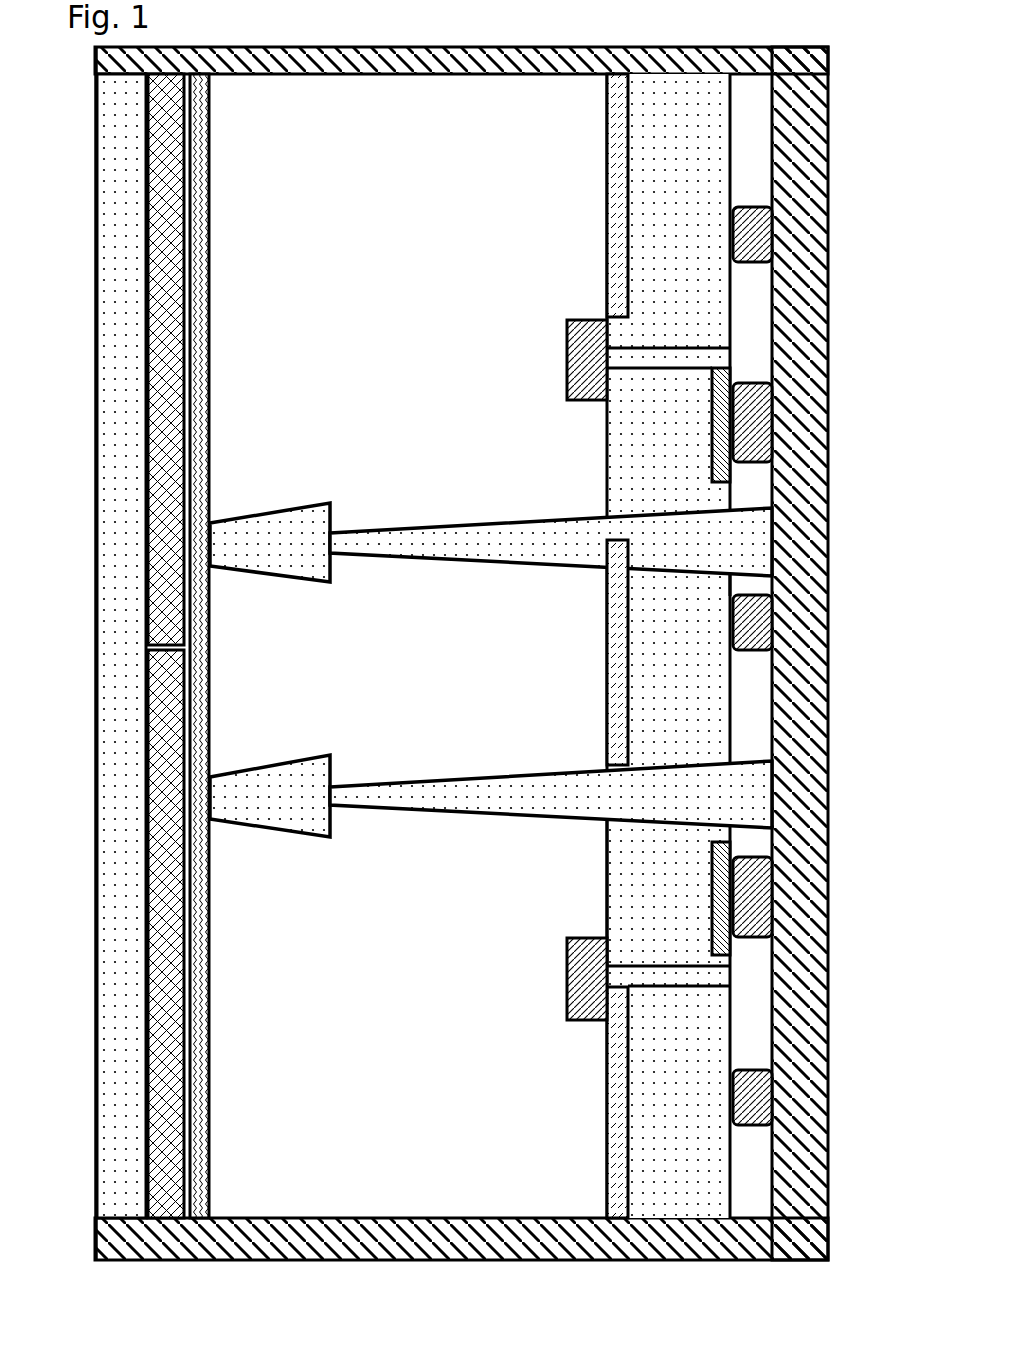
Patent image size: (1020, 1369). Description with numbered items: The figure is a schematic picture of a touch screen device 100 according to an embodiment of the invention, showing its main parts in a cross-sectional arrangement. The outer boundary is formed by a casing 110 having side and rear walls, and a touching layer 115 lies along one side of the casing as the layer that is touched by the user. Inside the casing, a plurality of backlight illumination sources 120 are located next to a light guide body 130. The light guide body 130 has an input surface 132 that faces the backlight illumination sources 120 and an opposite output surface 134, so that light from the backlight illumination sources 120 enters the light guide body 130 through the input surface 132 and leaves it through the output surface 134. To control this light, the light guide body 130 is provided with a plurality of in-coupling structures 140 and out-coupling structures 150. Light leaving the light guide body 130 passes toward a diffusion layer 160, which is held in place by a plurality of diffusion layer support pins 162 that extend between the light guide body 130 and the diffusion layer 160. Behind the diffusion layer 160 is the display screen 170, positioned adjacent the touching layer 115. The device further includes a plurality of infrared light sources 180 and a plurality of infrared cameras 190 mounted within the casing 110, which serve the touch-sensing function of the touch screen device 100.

The touch screen device 100 is at (282, 29).
The casing 110 is at (108, 55).
The touching layer 115 is at (108, 138).
The backlight illumination sources 120 is at (757, 428).
The light guide body 130 is at (718, 496).
The input surface 132 is at (733, 587).
The output surface 134 is at (607, 882).
The in-coupling structures 140 is at (727, 948).
The out-coupling structures 150 is at (607, 1088).
The diffusion layer 160 is at (209, 1124).
The diffusion layer support pins 162 is at (537, 797).
The display screen 170 is at (172, 1168).
The infrared light sources 180 is at (757, 1090).
The infrared cameras 190 is at (567, 990).